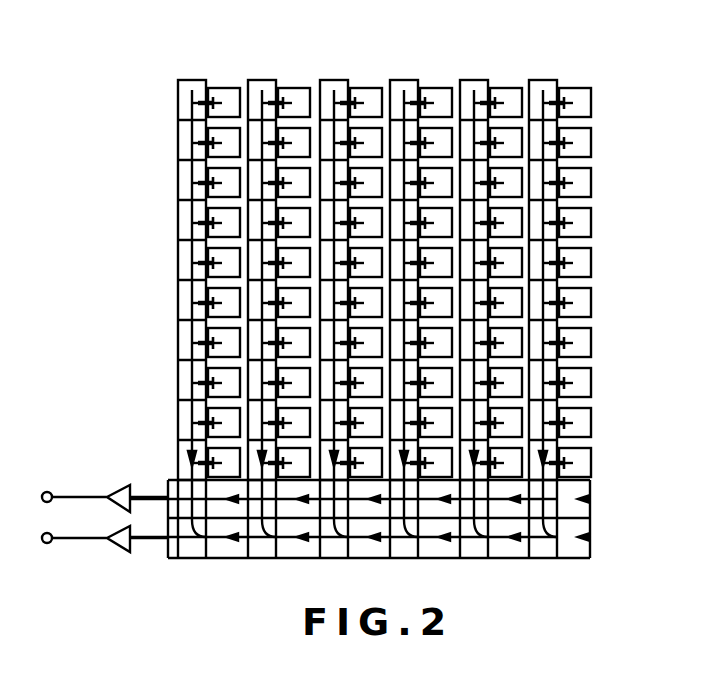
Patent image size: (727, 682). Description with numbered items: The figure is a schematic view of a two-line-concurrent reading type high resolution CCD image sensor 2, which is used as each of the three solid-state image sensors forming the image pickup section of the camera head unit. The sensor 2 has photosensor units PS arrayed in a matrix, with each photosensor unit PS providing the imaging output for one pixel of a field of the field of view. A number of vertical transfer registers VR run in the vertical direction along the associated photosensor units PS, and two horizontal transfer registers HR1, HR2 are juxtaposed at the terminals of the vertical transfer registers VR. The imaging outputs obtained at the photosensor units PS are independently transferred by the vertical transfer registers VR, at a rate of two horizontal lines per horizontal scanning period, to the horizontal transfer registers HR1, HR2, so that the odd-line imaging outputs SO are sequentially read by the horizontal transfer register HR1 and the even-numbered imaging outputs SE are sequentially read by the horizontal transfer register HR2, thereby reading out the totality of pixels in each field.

The CCD image sensor 2 is at (90, 118).
The photosensor unit PS is at (588, 143).
The vertical transfer register VR is at (482, 257).
The horizontal transfer register HR1 is at (583, 500).
The horizontal transfer register HR2 is at (583, 541).
The odd-line imaging output SO is at (105, 493).
The even-numbered imaging output SE is at (105, 534).